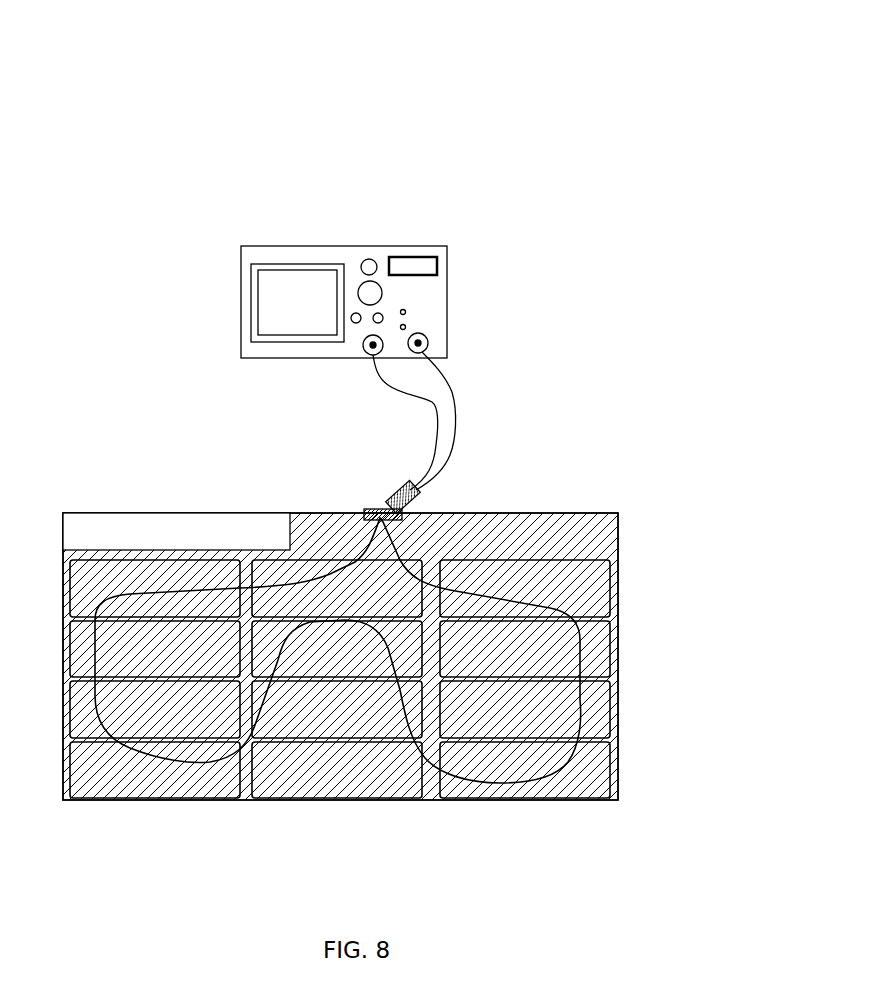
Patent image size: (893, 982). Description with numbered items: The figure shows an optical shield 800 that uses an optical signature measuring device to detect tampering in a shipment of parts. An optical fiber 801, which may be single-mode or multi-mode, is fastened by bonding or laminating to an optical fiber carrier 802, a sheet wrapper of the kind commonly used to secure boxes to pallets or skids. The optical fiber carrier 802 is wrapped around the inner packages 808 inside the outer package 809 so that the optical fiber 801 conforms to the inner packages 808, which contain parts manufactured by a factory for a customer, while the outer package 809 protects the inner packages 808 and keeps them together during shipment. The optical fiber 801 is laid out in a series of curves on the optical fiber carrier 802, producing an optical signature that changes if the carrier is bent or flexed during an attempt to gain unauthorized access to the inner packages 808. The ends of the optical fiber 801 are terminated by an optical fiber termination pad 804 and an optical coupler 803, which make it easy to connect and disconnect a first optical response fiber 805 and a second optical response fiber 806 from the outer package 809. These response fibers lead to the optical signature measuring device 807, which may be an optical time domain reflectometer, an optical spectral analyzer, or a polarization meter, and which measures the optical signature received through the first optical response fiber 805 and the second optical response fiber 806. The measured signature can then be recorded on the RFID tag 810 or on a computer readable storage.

The optical shield 800 is at (378, 97).
The optical fiber 801 is at (587, 712).
The optical fiber carrier 802 is at (592, 530).
The optical coupler 803 is at (397, 497).
The optical fiber termination pad 804 is at (373, 510).
The first optical response fiber 805 is at (382, 377).
The second optical response fiber 806 is at (453, 382).
The optical signature measuring device 807 is at (447, 302).
The inner packages 808 is at (527, 558).
The outer package 809 is at (528, 513).
The RFID tag 810 is at (125, 512).